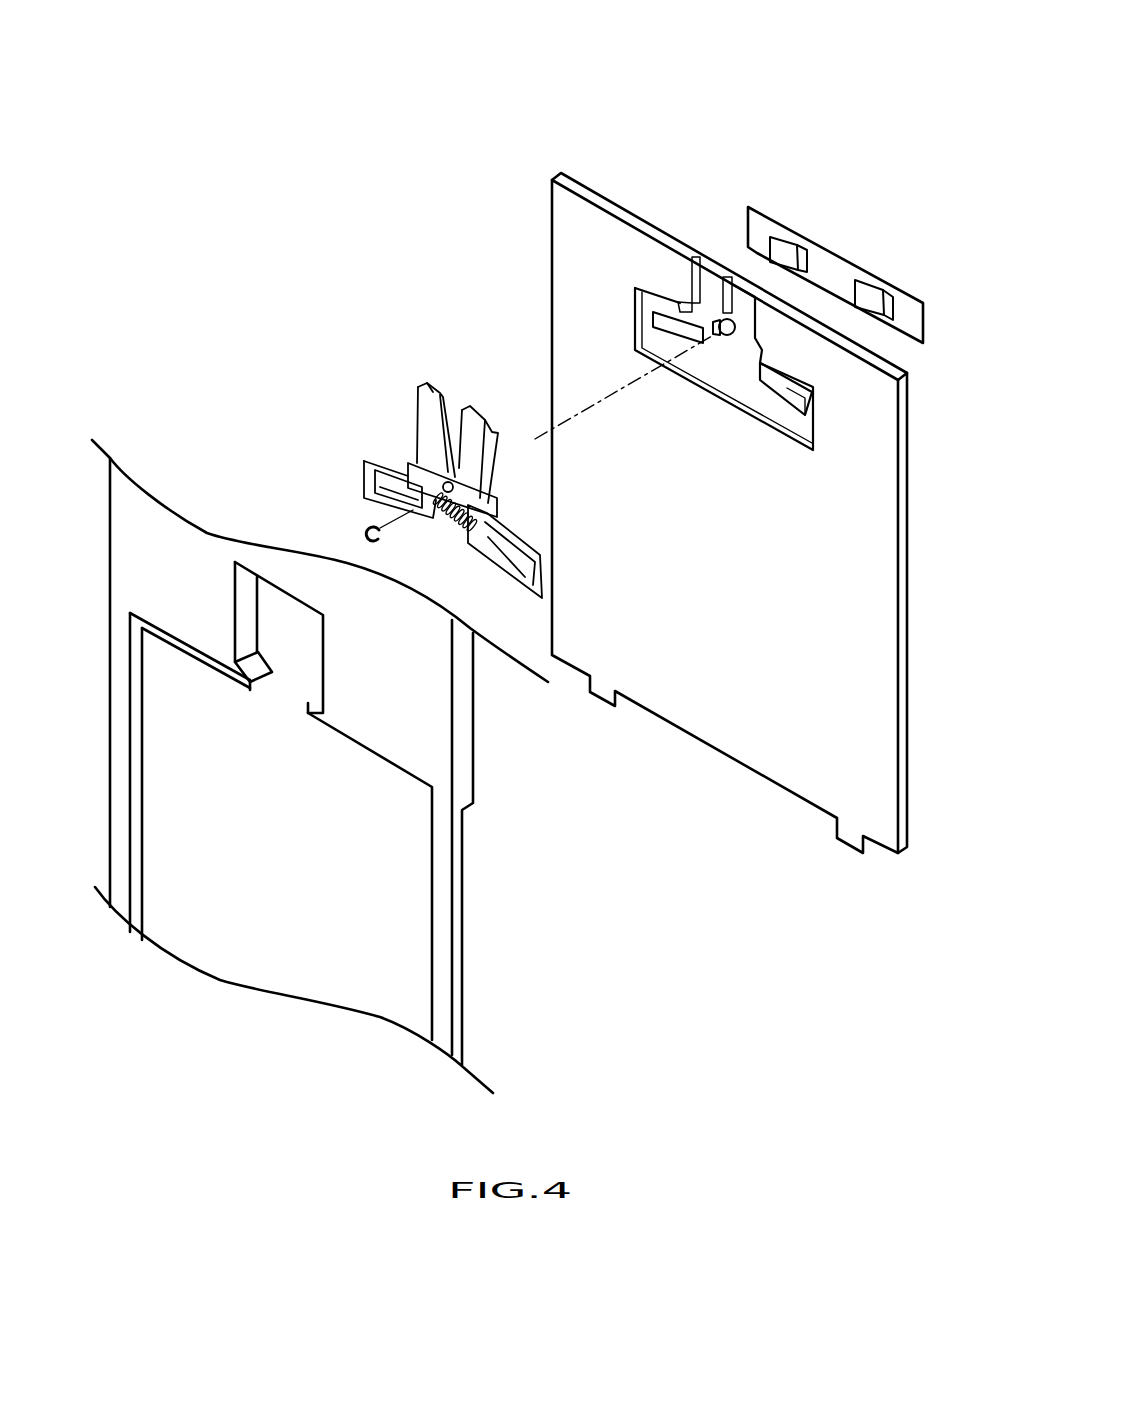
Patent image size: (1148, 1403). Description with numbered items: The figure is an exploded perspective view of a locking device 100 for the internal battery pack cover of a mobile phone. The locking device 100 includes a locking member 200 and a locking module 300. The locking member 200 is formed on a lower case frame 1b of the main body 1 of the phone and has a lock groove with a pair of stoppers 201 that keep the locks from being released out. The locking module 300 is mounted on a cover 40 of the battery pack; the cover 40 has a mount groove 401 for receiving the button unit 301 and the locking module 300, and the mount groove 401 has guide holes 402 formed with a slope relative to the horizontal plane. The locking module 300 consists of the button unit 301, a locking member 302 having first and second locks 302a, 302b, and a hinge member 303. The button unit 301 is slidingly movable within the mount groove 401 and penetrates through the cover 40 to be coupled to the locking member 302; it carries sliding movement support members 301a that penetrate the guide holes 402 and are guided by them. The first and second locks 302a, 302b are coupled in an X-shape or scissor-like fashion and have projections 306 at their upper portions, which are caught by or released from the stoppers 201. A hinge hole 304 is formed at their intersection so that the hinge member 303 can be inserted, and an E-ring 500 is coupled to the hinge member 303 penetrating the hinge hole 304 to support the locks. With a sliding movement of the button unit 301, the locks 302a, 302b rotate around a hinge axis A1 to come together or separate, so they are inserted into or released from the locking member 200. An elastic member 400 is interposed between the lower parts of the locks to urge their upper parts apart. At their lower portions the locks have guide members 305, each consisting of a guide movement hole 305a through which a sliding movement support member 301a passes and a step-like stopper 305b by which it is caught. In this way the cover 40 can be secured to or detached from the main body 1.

The locking device 100 is at (568, 90).
The main body 1 is at (458, 1045).
The lower case frame 1b is at (407, 972).
The cover 40 is at (877, 767).
The locking member 200 is at (267, 607).
The stoppers 201 is at (250, 683).
The locking module 300 is at (197, 216).
The button unit 301 is at (757, 215).
The sliding movement support member 301a is at (868, 292).
The locking member 302 is at (256, 340).
The first lock 302a is at (418, 420).
The second lock 302b is at (463, 443).
The hinge member 303 is at (703, 328).
The hinge hole 304 is at (486, 496).
The guide member 305 is at (364, 475).
The guide movement hole 305a is at (522, 585).
The step-like stopper 305b is at (506, 585).
The projections 306 is at (400, 405).
The elastic member 400 is at (445, 523).
The mount groove 401 is at (730, 373).
The guide holes 402 is at (787, 395).
The E-ring 500 is at (367, 528).
The hinge axis A1 is at (360, 542).